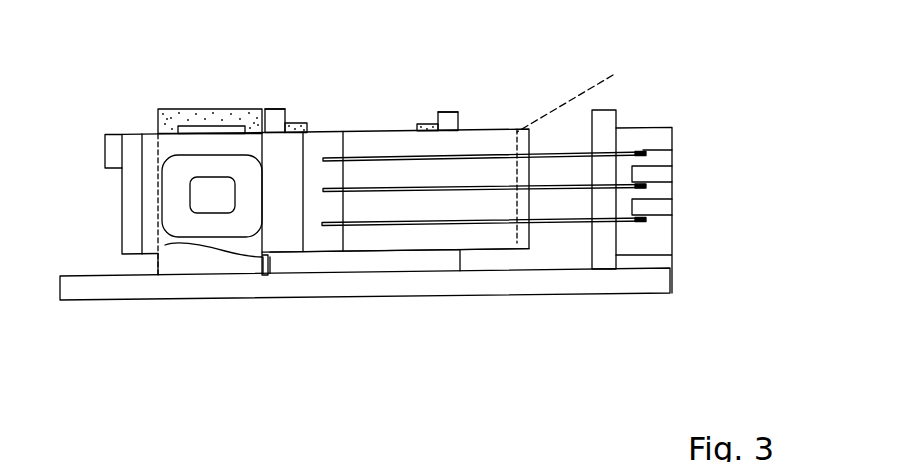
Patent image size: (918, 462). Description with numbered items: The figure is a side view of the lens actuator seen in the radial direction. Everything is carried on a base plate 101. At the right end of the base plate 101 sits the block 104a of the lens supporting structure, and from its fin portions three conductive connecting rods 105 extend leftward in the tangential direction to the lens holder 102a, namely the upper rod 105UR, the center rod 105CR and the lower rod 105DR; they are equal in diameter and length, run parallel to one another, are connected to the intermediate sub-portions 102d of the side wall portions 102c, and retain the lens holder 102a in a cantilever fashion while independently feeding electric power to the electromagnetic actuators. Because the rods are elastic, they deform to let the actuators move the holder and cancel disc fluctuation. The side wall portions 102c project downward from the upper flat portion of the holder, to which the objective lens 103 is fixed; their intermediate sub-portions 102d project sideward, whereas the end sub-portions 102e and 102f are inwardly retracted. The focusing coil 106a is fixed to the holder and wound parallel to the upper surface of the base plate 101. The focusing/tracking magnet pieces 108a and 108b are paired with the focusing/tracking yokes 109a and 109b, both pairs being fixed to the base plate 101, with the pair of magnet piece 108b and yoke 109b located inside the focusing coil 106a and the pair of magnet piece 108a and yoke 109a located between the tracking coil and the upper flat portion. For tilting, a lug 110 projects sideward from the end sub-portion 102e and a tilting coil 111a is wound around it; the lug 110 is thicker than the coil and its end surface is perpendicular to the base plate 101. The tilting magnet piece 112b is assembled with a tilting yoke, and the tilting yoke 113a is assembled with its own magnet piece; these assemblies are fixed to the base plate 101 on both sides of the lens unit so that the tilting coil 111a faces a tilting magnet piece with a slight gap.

The base plate 101 is at (103, 292).
The lens holder 102a is at (123, 140).
The side wall portions 102c is at (160, 151).
The intermediate sub-portions 102d is at (322, 145).
The end sub-portion 102e is at (238, 125).
The end sub-portion 102f is at (468, 143).
The objective lens 103 is at (200, 130).
The block 104a is at (662, 143).
The conductive connecting rods 105 is at (633, 235).
The conductive connecting rod 105UR is at (417, 157).
The conductive connecting rod 105CR is at (495, 190).
The conductive connecting rod 105DR is at (563, 223).
The focusing coil 106a is at (599, 91).
The focusing/tracking magnet piece 108a is at (307, 120).
The focusing/tracking magnet piece 108b is at (427, 123).
The focusing/tracking yoke 109a is at (285, 108).
The focusing/tracking yoke 109b is at (458, 113).
The lug 110 is at (220, 203).
The tilting coil 111a is at (192, 227).
The tilting magnet piece 112b is at (222, 147).
The tilting yoke 113a is at (228, 267).